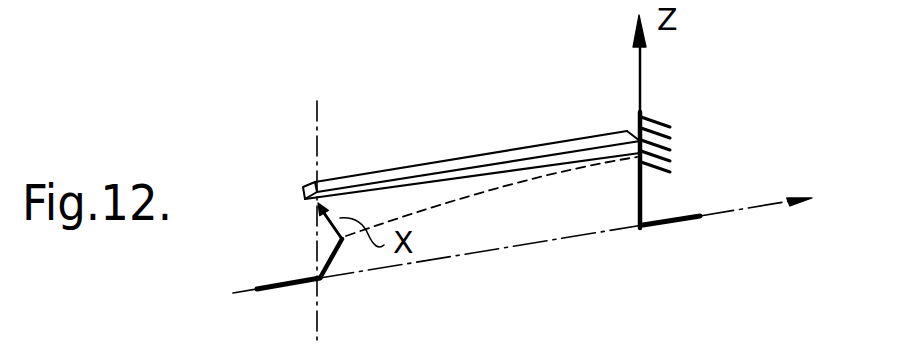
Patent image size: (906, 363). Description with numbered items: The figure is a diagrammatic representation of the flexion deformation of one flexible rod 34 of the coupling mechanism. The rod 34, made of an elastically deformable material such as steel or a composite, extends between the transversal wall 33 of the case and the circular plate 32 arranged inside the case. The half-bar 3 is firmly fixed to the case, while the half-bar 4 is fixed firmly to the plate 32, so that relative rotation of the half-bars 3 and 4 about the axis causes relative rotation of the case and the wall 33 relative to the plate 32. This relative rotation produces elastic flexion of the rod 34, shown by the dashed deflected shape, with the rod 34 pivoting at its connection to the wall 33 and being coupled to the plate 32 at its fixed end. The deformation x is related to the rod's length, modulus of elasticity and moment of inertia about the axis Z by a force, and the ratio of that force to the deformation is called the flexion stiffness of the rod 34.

The half-bar 3 is at (280, 291).
The half-bar 4 is at (673, 224).
The circular plate 32 is at (645, 197).
The transversal wall 33 is at (336, 252).
The flexible rod 34 is at (493, 153).